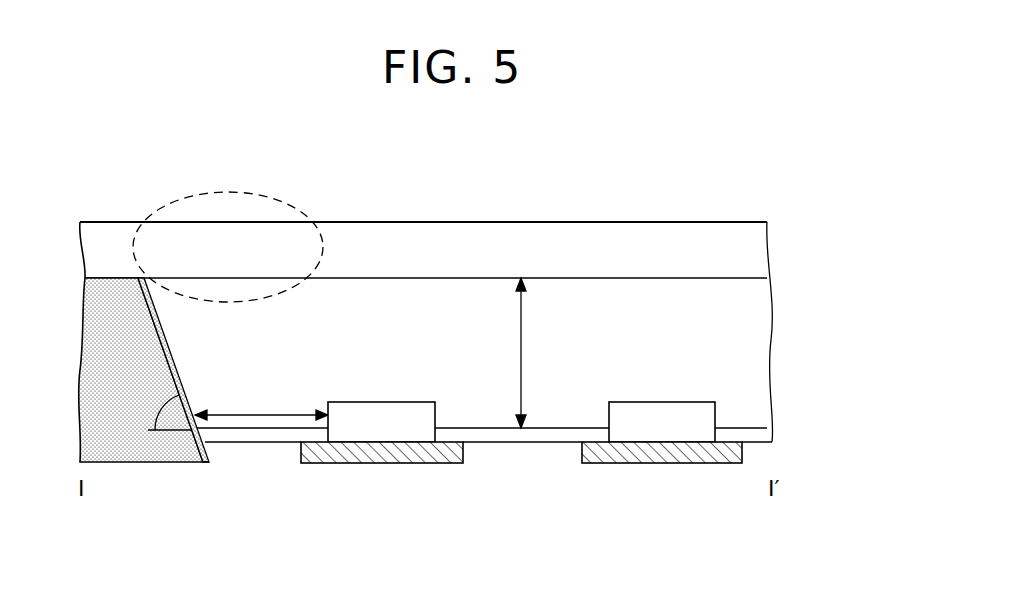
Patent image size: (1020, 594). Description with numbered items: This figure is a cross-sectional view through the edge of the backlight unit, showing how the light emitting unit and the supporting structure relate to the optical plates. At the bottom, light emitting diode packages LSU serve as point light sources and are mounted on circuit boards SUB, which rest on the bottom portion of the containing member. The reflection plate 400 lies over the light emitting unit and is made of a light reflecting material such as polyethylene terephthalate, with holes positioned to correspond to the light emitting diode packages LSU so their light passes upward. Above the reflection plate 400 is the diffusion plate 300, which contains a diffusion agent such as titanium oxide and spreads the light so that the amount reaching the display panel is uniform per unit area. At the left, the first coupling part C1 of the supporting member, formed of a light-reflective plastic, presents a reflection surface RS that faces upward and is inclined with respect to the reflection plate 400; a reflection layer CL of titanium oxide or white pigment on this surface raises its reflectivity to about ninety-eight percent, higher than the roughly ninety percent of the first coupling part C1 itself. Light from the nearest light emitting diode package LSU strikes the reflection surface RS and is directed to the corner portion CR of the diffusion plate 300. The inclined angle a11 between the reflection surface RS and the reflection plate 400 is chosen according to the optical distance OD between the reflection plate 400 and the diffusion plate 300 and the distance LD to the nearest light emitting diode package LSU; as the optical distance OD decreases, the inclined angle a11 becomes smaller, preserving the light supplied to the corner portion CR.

The diffusion plate 300 is at (755, 252).
The reflection plate 400 is at (758, 435).
The first coupling part C1 is at (97, 366).
The reflection surface RS is at (167, 343).
The inclined angle a11 is at (152, 409).
The corner portion CR is at (233, 192).
The distance LD is at (261, 406).
The optical distance OD is at (536, 353).
The light emitting diode package LSU is at (362, 430).
The circuit board SUB is at (408, 457).
The reflection layer CL is at (208, 465).